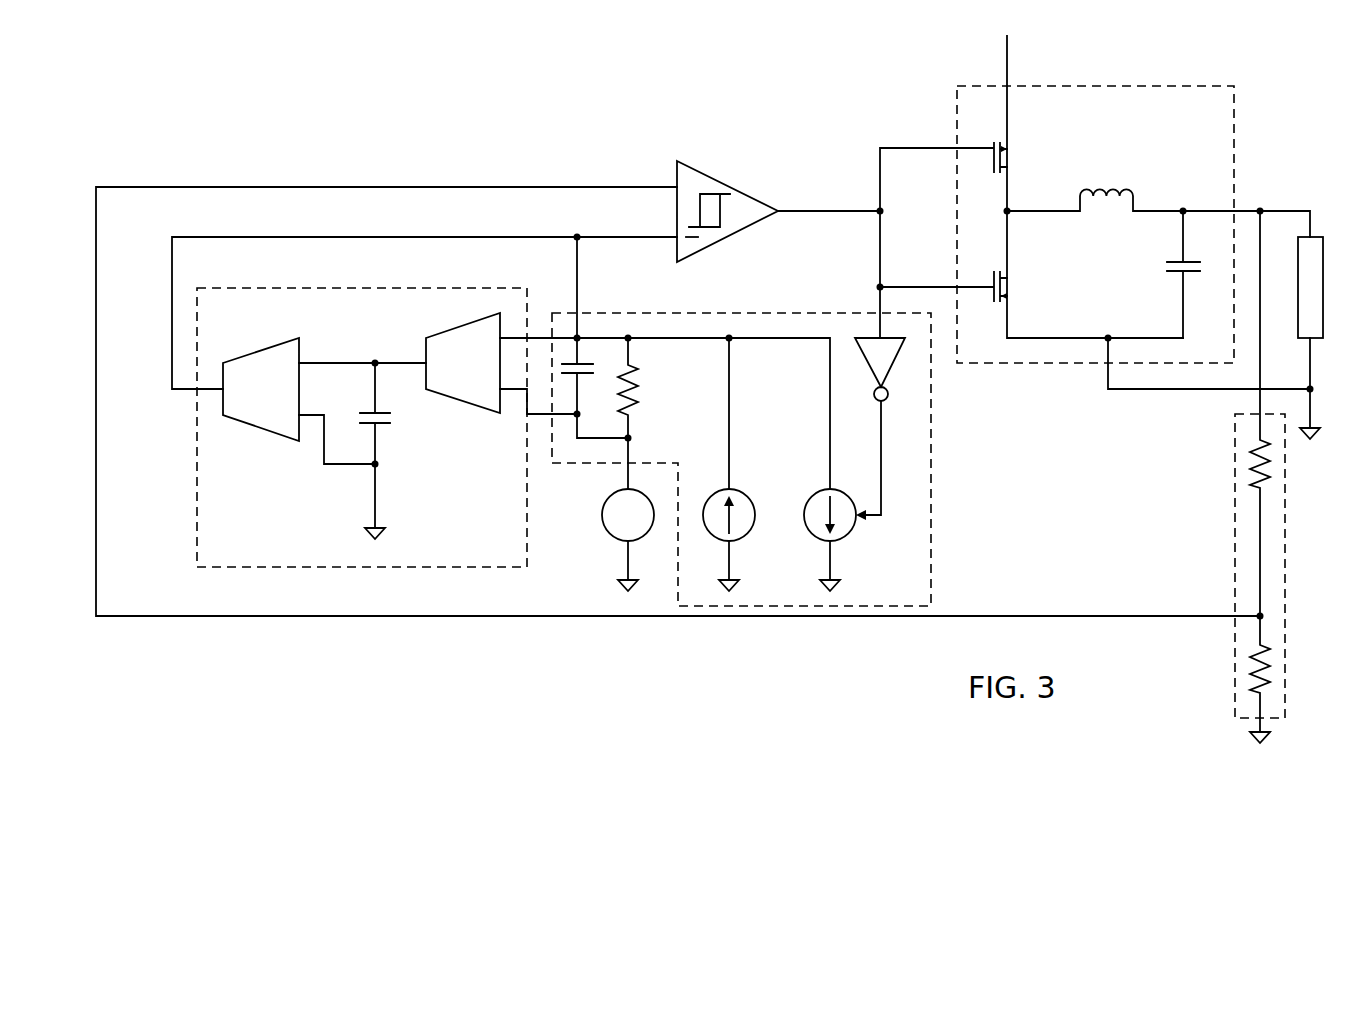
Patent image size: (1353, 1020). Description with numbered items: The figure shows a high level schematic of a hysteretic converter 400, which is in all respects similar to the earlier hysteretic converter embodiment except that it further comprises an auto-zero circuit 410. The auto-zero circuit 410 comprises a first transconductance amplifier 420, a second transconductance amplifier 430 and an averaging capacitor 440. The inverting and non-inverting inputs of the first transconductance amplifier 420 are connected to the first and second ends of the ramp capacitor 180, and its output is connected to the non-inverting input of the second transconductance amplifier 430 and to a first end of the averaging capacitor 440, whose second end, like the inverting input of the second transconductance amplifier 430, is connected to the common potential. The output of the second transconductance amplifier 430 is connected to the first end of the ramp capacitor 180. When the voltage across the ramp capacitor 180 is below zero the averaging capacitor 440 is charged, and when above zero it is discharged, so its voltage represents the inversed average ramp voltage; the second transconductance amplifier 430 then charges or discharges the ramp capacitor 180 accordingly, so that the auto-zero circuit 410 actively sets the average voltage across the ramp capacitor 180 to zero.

The hysteretic converter 400 is at (299, 85).
The auto-zero circuit 410 is at (457, 288).
The first transconductance amplifier 420 is at (446, 330).
The second transconductance amplifier 430 is at (264, 348).
The averaging capacitor 440 is at (390, 421).
The ramp capacitor 180 is at (593, 366).